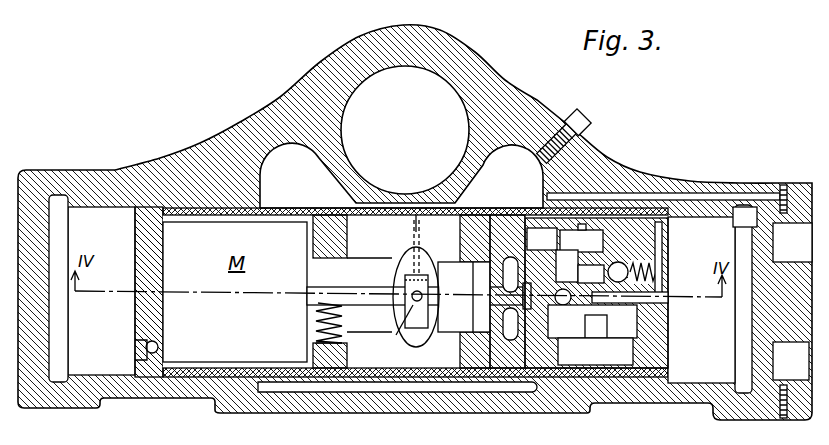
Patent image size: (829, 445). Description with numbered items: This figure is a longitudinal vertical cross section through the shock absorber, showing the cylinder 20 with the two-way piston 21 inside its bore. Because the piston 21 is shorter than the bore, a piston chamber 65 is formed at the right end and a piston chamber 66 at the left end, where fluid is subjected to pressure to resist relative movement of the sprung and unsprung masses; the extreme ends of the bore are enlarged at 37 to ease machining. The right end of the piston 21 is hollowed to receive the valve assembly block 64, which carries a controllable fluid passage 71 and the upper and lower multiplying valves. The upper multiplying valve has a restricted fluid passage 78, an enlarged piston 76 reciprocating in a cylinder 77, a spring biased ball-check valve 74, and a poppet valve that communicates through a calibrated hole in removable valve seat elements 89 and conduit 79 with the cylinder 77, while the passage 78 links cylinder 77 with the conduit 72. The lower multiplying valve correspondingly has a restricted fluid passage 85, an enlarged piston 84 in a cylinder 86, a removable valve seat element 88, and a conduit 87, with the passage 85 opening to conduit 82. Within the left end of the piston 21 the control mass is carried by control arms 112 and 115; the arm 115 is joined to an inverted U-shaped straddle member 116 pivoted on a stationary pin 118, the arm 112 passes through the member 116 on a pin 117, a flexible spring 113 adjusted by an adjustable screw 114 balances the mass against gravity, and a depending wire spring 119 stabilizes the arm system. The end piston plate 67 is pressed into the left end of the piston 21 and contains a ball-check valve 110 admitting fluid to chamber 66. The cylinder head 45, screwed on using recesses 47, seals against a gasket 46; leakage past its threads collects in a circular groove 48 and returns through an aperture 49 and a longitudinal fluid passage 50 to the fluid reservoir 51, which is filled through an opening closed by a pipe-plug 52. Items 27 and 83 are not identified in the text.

The cylinder 20 is at (157, 155).
The two-way piston 21 is at (200, 206).
The chamber 27 is at (401, 291).
The enlarged bore end 37 is at (61, 194).
The cylinder head 45 is at (800, 412).
The gasket 46 is at (783, 396).
The recesses 47 is at (792, 301).
The circular groove 48 is at (762, 389).
The aperture 49 is at (783, 185).
The longitudinal fluid passage 50 is at (687, 194).
The fluid reservoir 51 is at (401, 175).
The pipe-plug 52 is at (570, 108).
The valve assembly block 64 is at (596, 293).
The piston chamber 65 is at (701, 300).
The piston chamber 66 is at (101, 291).
The end piston plate 67 is at (135, 217).
The controllable fluid passage 71 is at (523, 291).
The conduit 72 is at (566, 285).
The spring biased ball-check valve 74 is at (662, 243).
The enlarged piston 76 is at (579, 253).
The cylinder 77 is at (527, 230).
The restricted fluid passage 78 is at (542, 239).
The conduit 79 is at (513, 228).
The conduit 82 is at (592, 321).
The rod 83 is at (668, 303).
The enlarged piston 84 is at (612, 366).
The restricted fluid passage 85 is at (592, 352).
The cylinder 86 is at (623, 372).
The conduit 87 is at (538, 384).
The removable valve seat element 88 is at (508, 378).
The removable valve seat elements 89 is at (504, 228).
The ball-check valve 110 is at (146, 347).
The control arm 112 is at (363, 289).
The flexible spring 113 is at (343, 320).
The adjustable screw 114 is at (340, 354).
The actuating arm 115 is at (464, 297).
The inverted U-shaped straddle member 116 is at (428, 292).
The pin 117 is at (391, 327).
The stationary pin 118 is at (419, 322).
The depending wire spring 119 is at (421, 262).